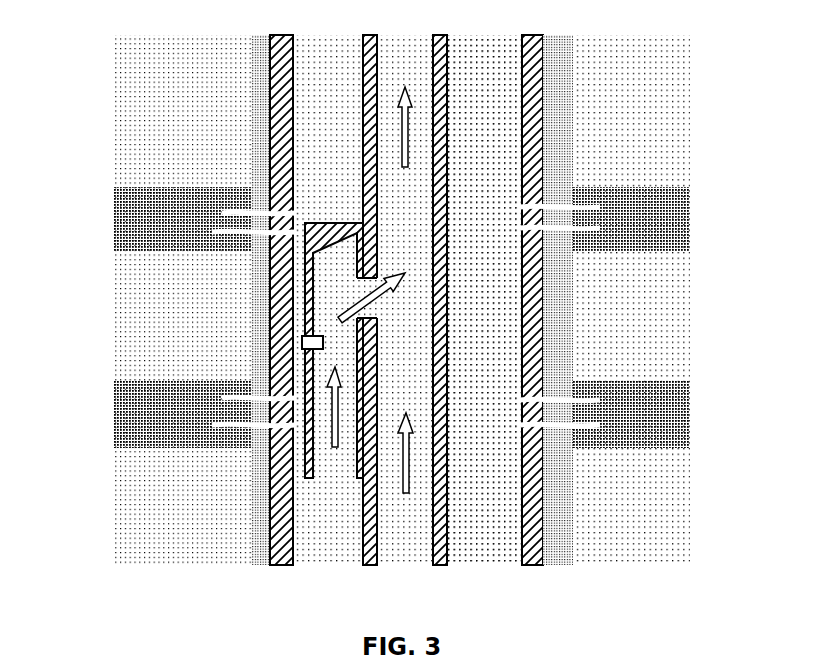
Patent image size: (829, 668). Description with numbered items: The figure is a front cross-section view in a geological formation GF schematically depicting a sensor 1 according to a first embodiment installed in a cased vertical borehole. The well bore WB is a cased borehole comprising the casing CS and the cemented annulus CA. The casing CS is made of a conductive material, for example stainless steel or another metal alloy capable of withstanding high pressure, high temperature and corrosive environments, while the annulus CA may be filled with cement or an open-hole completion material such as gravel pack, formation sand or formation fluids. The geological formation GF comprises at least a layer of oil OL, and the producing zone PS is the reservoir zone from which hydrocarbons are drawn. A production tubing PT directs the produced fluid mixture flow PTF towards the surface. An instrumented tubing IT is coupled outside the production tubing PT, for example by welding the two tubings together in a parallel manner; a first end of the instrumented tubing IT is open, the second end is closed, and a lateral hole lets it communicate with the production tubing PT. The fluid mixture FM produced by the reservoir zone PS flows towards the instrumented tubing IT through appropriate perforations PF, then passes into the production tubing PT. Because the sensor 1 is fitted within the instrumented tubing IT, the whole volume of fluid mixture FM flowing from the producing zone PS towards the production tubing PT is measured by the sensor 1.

The geological formation GF is at (183, 551).
The cemented annulus CA is at (260, 553).
The casing CS is at (278, 565).
The layer of oil OL is at (123, 217).
The producing zone PS is at (700, 185).
The production tubing PT is at (443, 137).
The produced fluid mixture flow PTF is at (405, 473).
The perforations PF is at (263, 213).
The instrumented tubing IT is at (312, 263).
The sensor 1 is at (296, 343).
The fluid mixture FM is at (333, 450).
The well bore WB is at (508, 548).